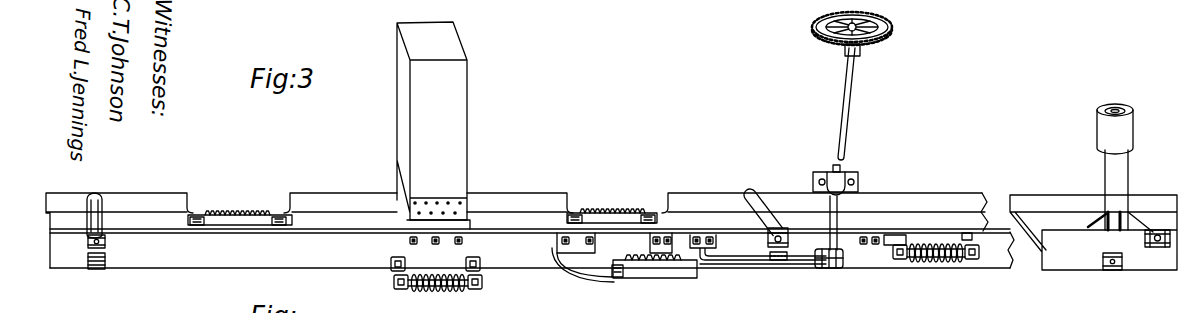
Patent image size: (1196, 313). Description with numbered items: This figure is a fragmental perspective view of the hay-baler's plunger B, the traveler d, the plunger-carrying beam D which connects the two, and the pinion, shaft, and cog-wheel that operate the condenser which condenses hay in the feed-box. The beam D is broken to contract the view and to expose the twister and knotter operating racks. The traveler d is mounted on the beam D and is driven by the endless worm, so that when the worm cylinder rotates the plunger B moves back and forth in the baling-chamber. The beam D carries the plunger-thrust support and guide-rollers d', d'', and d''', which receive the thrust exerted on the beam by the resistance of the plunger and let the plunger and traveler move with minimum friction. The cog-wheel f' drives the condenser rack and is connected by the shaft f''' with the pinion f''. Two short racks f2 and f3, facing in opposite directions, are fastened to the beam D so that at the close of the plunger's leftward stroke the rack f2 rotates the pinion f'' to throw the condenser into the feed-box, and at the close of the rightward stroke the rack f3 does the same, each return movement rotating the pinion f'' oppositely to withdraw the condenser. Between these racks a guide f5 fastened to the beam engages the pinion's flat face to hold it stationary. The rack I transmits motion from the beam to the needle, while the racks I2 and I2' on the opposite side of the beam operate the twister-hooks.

The plunger B is at (432, 121).
The rack I is at (400, 290).
The twister-hook operating rack I2 is at (612, 195).
The twister-hook operating rack I2' is at (240, 197).
The plunger-carrying beam D is at (758, 246).
The traveler d is at (1120, 168).
The plunger-thrust support and guide-roller d' is at (605, 266).
The plunger-thrust support and guide-roller d'' is at (435, 202).
The plunger-thrust support and guide-roller d''' is at (1154, 262).
The cog-wheel f' is at (860, 28).
The pinion f'' is at (832, 249).
The shaft f''' is at (845, 119).
The rack f2 is at (930, 263).
The rack f3 is at (660, 278).
The guide f5 is at (735, 263).